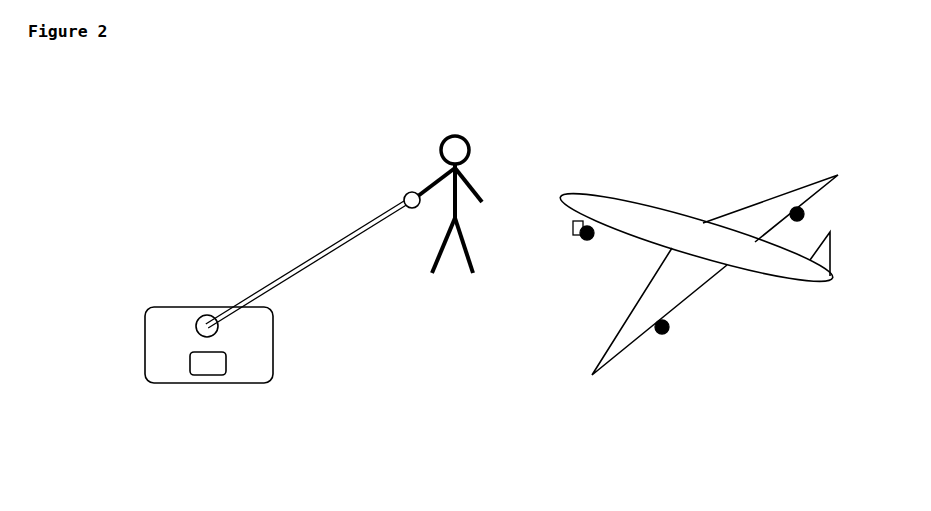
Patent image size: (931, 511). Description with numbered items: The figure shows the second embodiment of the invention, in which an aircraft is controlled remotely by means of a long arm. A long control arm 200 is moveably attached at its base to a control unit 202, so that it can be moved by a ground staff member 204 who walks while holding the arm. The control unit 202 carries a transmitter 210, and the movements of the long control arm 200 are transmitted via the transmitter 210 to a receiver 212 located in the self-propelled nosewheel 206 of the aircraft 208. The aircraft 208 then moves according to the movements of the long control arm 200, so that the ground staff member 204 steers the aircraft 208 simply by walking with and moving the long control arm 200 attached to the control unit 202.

The long control arm 200 is at (295, 268).
The control unit 202 is at (167, 345).
The ground staff member 204 is at (437, 148).
The self-propelled nosewheel 206 is at (580, 238).
The aircraft 208 is at (633, 220).
The transmitter 210 is at (225, 368).
The receiver 212 is at (578, 224).